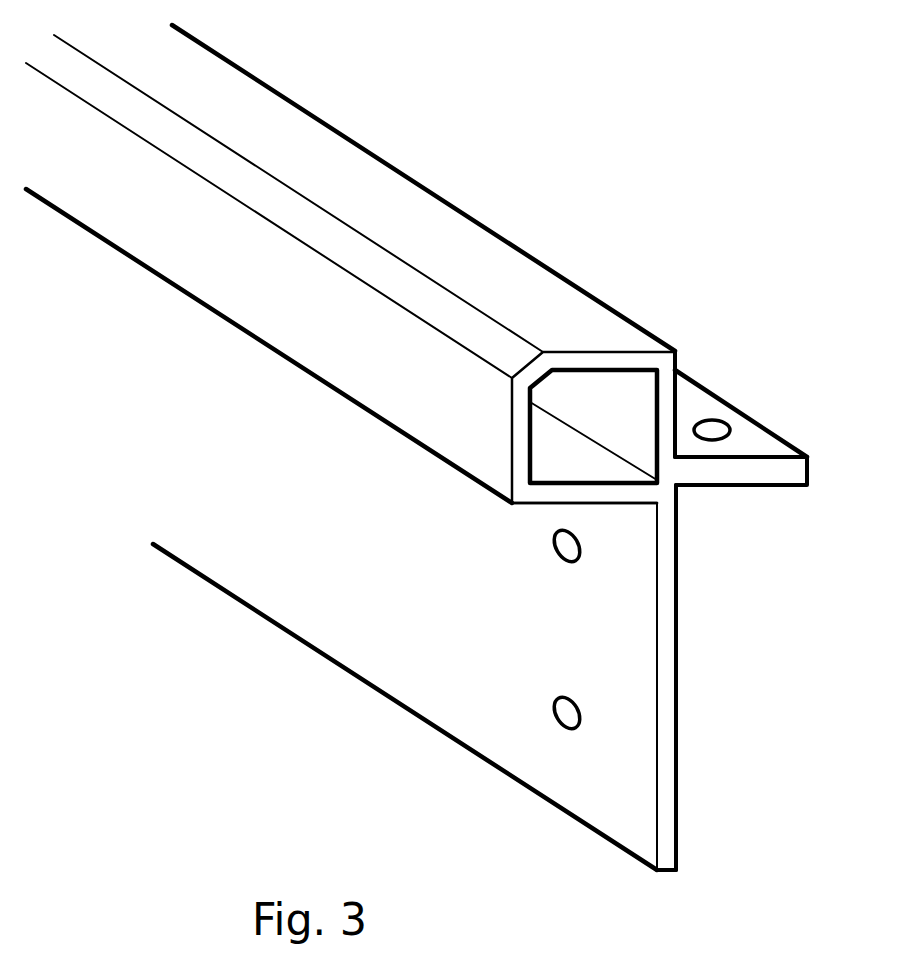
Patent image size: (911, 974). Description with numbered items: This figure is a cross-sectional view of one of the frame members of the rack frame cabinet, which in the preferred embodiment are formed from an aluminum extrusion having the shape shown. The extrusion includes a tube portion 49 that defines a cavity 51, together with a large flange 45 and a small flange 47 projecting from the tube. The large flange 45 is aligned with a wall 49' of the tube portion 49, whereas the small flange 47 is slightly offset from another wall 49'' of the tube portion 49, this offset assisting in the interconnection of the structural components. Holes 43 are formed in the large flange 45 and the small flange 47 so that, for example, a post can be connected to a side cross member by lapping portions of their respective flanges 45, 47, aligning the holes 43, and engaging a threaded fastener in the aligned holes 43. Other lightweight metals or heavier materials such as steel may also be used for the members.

The holes 43 is at (712, 430).
The large flange 45 is at (583, 660).
The small flange 47 is at (750, 445).
The tube portion 49 is at (350, 264).
The wall of the tube portion 49' is at (736, 388).
The wall of the tube portion 49'' is at (542, 553).
The cavity 51 is at (600, 390).